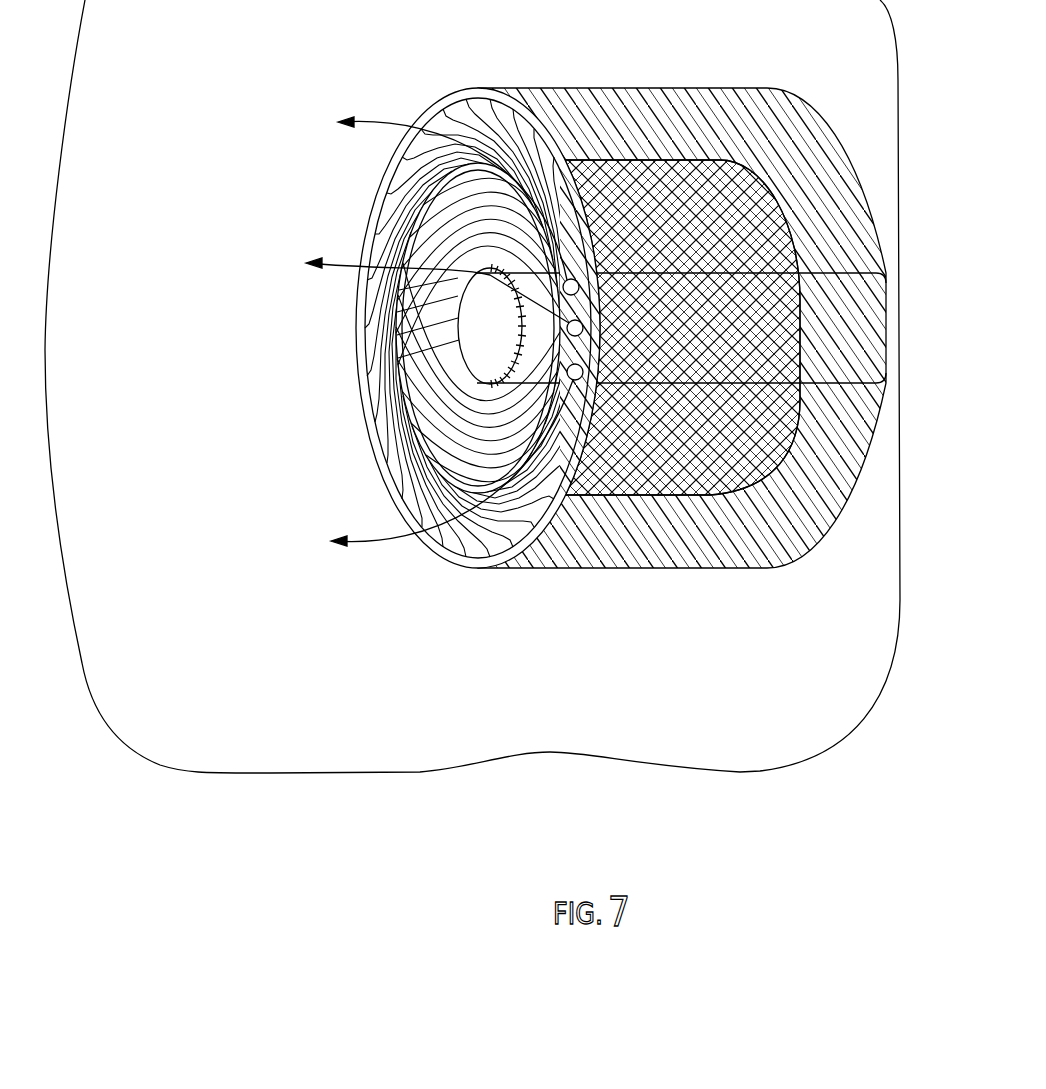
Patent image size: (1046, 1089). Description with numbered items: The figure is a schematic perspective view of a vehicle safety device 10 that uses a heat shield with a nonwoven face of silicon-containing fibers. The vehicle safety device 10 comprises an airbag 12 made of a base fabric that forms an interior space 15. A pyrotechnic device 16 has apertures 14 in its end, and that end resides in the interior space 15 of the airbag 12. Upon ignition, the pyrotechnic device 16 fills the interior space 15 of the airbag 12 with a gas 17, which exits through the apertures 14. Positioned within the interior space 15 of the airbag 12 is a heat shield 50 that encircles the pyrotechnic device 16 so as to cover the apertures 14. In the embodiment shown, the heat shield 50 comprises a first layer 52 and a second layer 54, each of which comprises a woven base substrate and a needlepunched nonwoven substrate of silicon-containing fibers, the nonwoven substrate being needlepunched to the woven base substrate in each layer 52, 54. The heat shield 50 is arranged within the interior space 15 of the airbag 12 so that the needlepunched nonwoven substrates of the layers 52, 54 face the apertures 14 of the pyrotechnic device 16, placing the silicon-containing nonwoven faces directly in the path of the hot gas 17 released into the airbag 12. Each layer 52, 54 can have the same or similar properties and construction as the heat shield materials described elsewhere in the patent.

The vehicle safety device 10 is at (472, 453).
The airbag 12 is at (133, 372).
The apertures 14 is at (580, 296).
The interior space 15 is at (510, 386).
The pyrotechnic device 16 is at (818, 328).
The gas 17 is at (384, 120).
The heat shield 50 is at (720, 336).
The first layer 52 is at (482, 492).
The second layer 54 is at (507, 568).